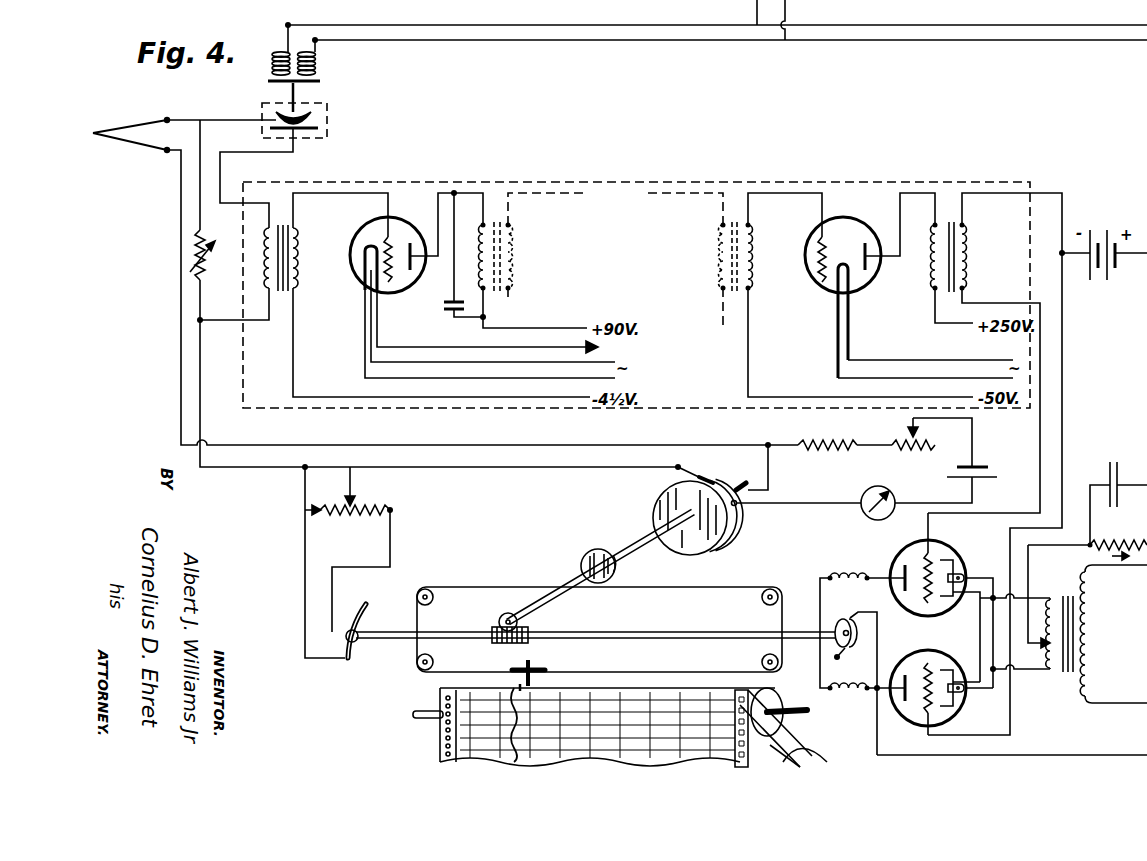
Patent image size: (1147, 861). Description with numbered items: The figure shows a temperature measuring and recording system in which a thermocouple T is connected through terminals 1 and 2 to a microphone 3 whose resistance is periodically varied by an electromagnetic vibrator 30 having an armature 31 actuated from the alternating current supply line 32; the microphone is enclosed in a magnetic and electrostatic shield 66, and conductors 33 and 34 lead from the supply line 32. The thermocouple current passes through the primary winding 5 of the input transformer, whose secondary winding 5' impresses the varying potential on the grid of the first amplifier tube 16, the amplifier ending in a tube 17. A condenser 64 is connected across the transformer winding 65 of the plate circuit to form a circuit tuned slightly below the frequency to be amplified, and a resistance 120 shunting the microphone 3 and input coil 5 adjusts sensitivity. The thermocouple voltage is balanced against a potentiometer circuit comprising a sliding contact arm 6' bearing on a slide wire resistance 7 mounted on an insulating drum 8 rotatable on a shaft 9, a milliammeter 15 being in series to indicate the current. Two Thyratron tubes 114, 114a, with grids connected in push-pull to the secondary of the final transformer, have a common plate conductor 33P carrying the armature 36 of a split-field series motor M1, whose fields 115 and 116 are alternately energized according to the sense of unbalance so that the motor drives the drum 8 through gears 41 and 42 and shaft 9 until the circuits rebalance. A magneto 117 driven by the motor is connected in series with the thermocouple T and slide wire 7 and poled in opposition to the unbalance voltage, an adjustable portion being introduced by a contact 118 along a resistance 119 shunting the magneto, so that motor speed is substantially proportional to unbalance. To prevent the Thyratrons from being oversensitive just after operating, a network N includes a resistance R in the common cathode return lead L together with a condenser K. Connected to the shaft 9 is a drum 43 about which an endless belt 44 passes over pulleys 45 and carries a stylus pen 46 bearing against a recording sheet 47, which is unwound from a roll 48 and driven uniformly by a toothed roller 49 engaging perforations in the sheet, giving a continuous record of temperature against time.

The terminal 1 is at (176, 118).
The terminal 2 is at (165, 156).
The microphone 3 is at (312, 120).
The input transformer primary winding 5 is at (269, 258).
The secondary winding 5' is at (441, 295).
The sliding contact arm 6' is at (709, 467).
The slide wire resistance 7 is at (742, 525).
The insulating drum 8 is at (700, 546).
The shaft 9 is at (645, 550).
The milliammeter 15 is at (862, 516).
The first amplifier tube 16 is at (402, 223).
The power tube 17 is at (847, 222).
The electromagnetic vibrator 30 is at (316, 62).
The vibrator armature 31 is at (318, 84).
The alternating current supply line 32 is at (789, 10).
The conductor 33 is at (962, 25).
The conductor 34 is at (962, 40).
The motor armature 36 is at (852, 616).
The common plate conductor 33P is at (1045, 755).
The gear 41 is at (495, 645).
The gear 42 is at (504, 614).
The drum 43 is at (584, 557).
The endless belt 44 is at (479, 588).
The pulleys 45 is at (763, 600).
The stylus pen 46 is at (538, 669).
The recording sheet 47 is at (594, 727).
The roll 48 is at (815, 745).
The roller 49 is at (773, 700).
The condenser 64 is at (454, 314).
The transformer winding 65 is at (483, 257).
The magnetic and electrostatic shield 66 is at (261, 105).
The Thyratron tube 114 is at (950, 552).
The Thyratron tube 114a is at (952, 722).
The field winding 115 is at (875, 574).
The field winding 116 is at (852, 700).
The magneto 117 is at (347, 657).
The contact 118 is at (353, 498).
The resistance 119 is at (360, 516).
The resistance 120 is at (208, 270).
The thermocouple T is at (150, 124).
The common cathode return lead L is at (1035, 568).
The condenser K is at (1119, 473).
The network N is at (1126, 526).
The resistance R is at (1130, 549).
The motor M1 is at (858, 632).